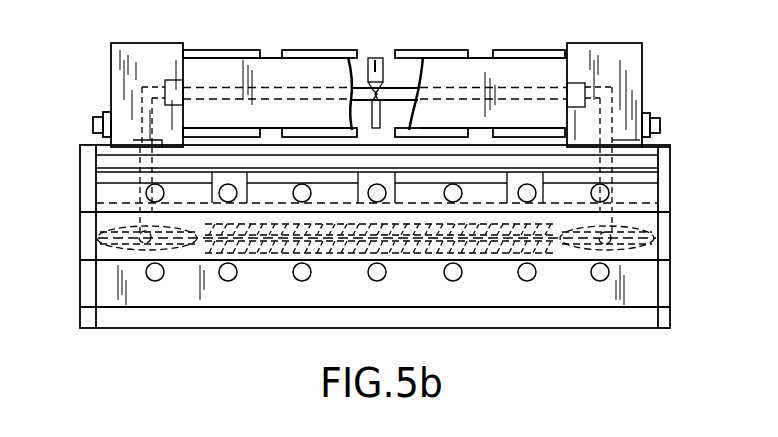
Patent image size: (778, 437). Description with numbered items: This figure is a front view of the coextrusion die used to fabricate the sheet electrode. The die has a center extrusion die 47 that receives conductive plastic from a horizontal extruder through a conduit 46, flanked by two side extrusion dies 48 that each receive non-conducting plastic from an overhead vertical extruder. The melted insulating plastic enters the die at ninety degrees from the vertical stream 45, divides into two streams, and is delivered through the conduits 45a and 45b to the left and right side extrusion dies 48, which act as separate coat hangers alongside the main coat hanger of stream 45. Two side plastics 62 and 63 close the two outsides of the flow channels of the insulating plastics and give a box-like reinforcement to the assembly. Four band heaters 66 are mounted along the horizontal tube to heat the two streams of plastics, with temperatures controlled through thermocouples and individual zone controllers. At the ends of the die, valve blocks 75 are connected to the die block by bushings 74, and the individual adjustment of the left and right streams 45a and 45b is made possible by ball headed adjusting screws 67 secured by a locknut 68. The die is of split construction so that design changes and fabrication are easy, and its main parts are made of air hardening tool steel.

The vertical stream 45 is at (385, 27).
The conduit 45a is at (310, 86).
The conduit 45b is at (512, 90).
The conduit 46 is at (352, 252).
The center extrusion die 47 is at (433, 240).
The side extrusion dies 48 is at (143, 243).
The side plastic 62 is at (670, 178).
The side plastic 63 is at (86, 188).
The band heaters 66 is at (228, 20).
The ball headed adjusting screws 67 is at (660, 125).
The locknut 68 is at (648, 112).
The bushings 74 is at (658, 152).
The valve blocks 75 is at (642, 62).